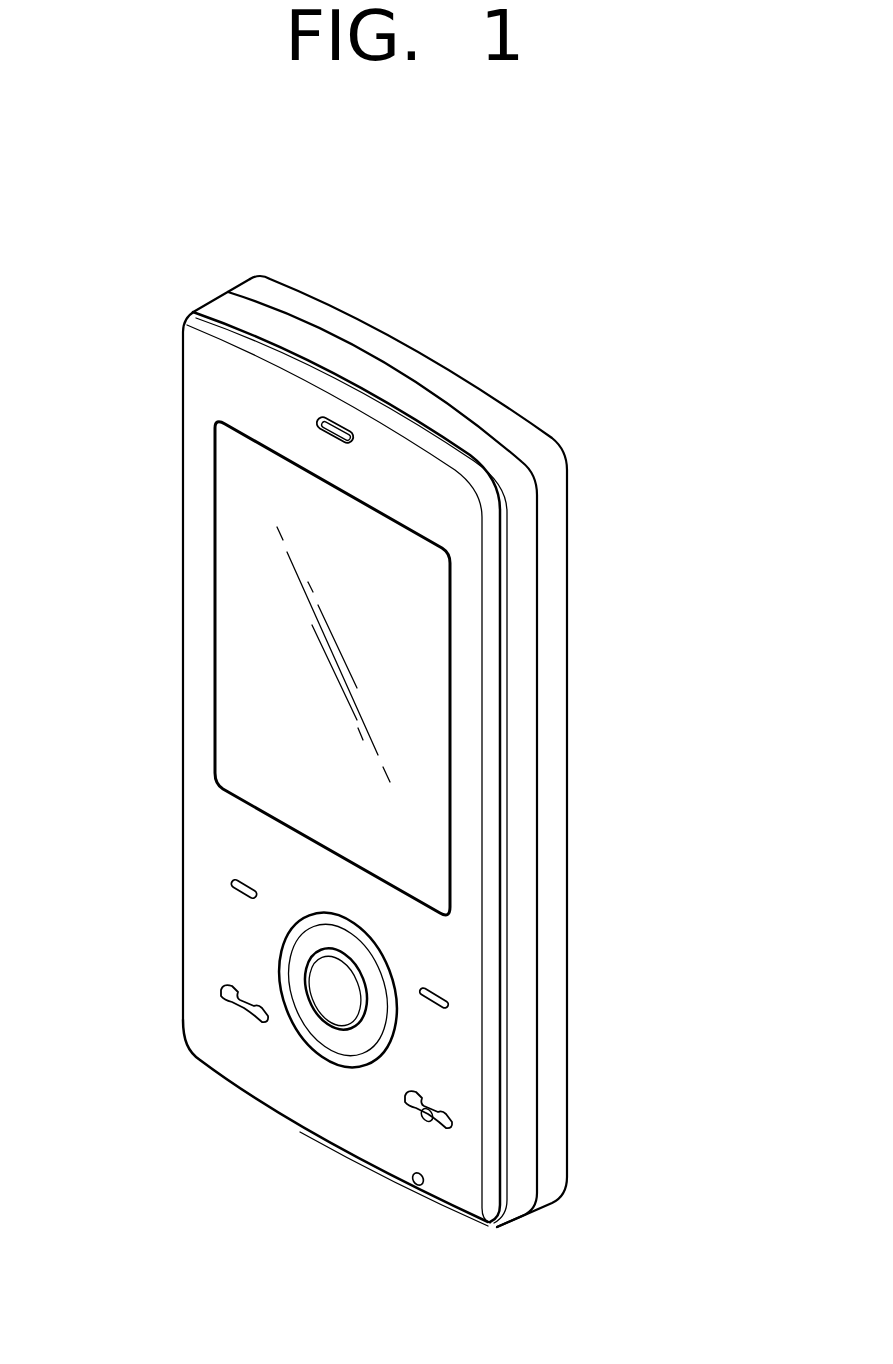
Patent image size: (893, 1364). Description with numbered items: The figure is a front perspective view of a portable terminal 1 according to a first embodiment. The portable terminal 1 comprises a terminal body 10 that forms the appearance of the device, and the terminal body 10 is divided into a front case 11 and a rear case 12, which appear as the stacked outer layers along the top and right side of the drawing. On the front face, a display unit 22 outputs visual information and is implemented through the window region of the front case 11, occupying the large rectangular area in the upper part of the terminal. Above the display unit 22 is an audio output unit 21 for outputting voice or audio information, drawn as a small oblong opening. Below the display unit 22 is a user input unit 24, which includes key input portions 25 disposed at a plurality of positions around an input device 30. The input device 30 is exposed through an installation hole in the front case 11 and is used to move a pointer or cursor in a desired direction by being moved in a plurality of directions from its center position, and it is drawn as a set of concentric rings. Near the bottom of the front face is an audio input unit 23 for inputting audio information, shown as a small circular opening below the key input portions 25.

The portable terminal 1 is at (138, 384).
The terminal body 10 is at (473, 233).
The front case 11 is at (391, 385).
The rear case 12 is at (446, 385).
The audio output unit 21 is at (330, 423).
The display unit 22 is at (233, 537).
The audio input unit 23 is at (415, 1186).
The user input unit 24 is at (190, 838).
The key input portions 25 is at (235, 890).
The input device 30 is at (338, 1005).